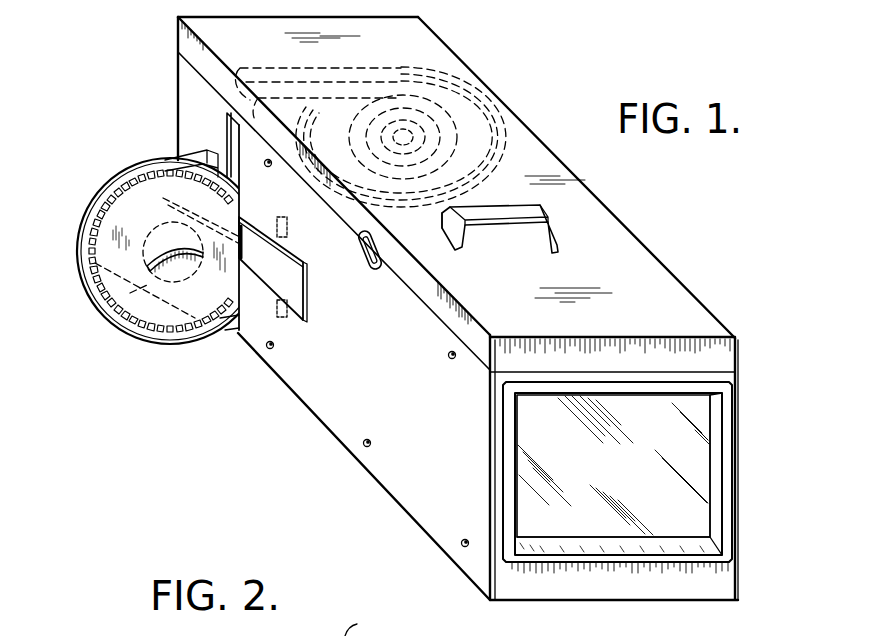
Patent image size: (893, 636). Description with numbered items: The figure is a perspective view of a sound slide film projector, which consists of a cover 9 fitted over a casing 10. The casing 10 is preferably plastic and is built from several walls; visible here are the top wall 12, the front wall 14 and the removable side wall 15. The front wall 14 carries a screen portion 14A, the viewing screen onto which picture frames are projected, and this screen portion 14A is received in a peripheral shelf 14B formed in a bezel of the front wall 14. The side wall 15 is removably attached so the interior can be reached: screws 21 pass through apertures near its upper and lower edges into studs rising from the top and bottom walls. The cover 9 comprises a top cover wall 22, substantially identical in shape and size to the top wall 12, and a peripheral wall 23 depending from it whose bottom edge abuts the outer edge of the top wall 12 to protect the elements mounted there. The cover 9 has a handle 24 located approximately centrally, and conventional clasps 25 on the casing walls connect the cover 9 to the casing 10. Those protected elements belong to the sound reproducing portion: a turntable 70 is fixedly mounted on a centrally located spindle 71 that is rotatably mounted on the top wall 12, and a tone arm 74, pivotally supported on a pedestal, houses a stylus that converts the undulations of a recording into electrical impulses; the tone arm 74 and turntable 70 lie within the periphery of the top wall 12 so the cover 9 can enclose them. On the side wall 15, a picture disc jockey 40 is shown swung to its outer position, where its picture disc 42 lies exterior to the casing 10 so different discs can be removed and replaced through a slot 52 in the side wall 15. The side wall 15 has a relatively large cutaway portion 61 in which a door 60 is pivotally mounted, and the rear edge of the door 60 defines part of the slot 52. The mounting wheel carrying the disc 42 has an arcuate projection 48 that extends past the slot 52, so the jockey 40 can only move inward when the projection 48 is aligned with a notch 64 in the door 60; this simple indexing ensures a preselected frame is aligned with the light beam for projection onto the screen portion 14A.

In FIG. 1, the cover 9 is at (709, 304).
In FIG. 1, the casing 10 is at (357, 475).
In FIG. 1, the top wall 12 is at (600, 634).
In FIG. 1, the front wall 14 is at (700, 475).
In FIG. 1, the screen portion 14A is at (642, 527).
In FIG. 1, the peripheral shelf 14B is at (718, 533).
In FIG. 1, the side wall 15 is at (364, 362).
In FIG. 1, the screws 21 is at (268, 167).
In FIG. 1, the top cover wall 22 is at (642, 257).
In FIG. 1, the peripheral wall 23 is at (725, 356).
In FIG. 1, the handle 24 is at (565, 213).
In FIG. 1, the clasps 25 is at (359, 248).
In FIG. 1, the picture disc jockey 40 is at (98, 310).
In FIG. 1, the picture disc 42 is at (155, 318).
In FIG. 1, the arcuate projection 48 is at (185, 266).
In FIG. 1, the slot 52 is at (226, 128).
In FIG. 1, the door 60 is at (290, 284).
In FIG. 1, the cutaway portion 61 is at (287, 250).
In FIG. 1, the notch 64 is at (243, 233).
In FIG. 1, the turntable 70 is at (532, 129).
In FIG. 1, the spindle 71 is at (497, 108).
In FIG. 1, the tone arm 74 is at (467, 63).
In FIG. 2, the tone arm 74 is at (365, 623).